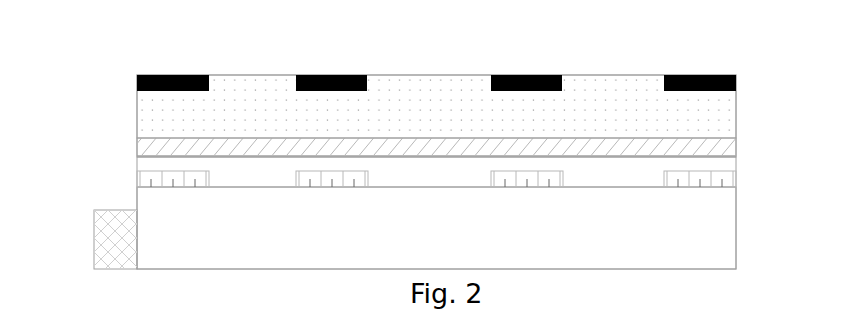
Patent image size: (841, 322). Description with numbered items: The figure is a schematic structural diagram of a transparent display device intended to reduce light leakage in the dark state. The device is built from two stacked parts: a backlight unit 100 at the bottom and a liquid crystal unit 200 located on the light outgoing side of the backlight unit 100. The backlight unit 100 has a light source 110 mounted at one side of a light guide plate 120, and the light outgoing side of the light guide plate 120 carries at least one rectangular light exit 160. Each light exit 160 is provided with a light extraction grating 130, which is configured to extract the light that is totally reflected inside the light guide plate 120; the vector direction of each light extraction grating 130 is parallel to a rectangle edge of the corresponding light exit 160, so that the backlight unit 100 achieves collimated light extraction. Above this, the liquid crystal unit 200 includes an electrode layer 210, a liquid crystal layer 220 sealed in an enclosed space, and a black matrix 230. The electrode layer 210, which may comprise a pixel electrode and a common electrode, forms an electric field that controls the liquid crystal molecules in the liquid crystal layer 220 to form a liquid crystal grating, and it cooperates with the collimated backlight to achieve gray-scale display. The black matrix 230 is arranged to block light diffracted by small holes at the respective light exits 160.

The backlight unit 100 is at (736, 157).
The light source 110 is at (94, 253).
The light guide plate 120 is at (436, 228).
The light extraction grating 130 is at (137, 180).
The light exit 160 is at (172, 187).
The liquid crystal unit 200 is at (736, 75).
The electrode layer 210 is at (137, 142).
The liquid crystal layer 220 is at (137, 112).
The black matrix 230 is at (514, 74).